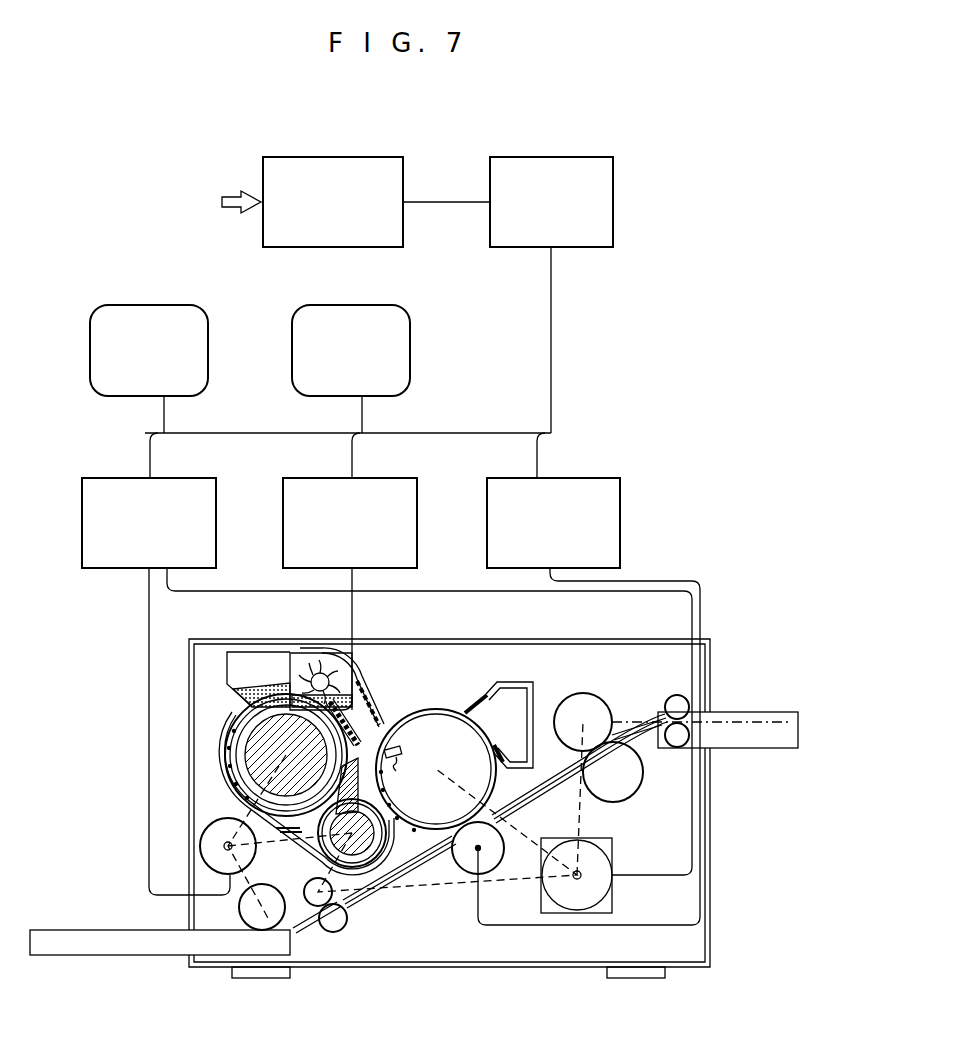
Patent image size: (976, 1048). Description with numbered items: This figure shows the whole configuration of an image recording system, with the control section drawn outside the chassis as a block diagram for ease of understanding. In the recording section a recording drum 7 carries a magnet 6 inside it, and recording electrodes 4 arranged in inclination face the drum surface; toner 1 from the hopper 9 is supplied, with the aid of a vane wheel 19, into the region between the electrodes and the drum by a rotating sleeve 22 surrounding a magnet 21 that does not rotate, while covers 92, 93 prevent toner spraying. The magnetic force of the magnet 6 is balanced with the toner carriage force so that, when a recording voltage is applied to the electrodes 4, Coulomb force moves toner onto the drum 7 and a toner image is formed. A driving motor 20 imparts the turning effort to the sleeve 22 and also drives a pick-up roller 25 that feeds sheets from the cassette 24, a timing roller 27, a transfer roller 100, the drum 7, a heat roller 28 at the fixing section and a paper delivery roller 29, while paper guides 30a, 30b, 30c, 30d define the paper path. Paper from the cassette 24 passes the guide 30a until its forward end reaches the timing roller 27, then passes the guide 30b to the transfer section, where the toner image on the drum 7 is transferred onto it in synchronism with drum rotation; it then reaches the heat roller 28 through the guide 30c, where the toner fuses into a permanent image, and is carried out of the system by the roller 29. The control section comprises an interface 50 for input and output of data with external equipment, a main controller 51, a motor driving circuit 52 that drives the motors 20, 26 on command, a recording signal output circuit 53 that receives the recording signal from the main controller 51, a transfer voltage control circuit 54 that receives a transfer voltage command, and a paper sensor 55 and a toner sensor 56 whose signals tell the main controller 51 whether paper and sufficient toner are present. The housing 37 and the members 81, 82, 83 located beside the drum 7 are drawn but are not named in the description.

The toner 1 is at (238, 706).
The recording electrodes 4 is at (362, 736).
The magnet 6 is at (400, 768).
The recording drum 7 is at (423, 710).
The toner hopper 9 is at (230, 674).
The vane wheel 19 is at (313, 670).
The driving motor 20 is at (200, 834).
The magnet 21 is at (260, 753).
The sleeve 22 is at (250, 782).
The cassette 24 is at (86, 932).
The pick-up roller 25 is at (239, 914).
The motor 26 is at (605, 854).
The timing roller 27 is at (308, 884).
The heat roller 28 is at (582, 693).
The paper delivery roller 29 is at (676, 695).
The paper guide 30a is at (316, 924).
The paper guide 30b is at (406, 873).
The paper guide 30c is at (547, 786).
The paper guide 30d is at (636, 722).
The housing 37 is at (405, 968).
The interface 50 is at (332, 157).
The main controller 51 is at (548, 157).
The motor driving circuit 52 is at (119, 478).
The recording signal output circuit 53 is at (319, 478).
The transfer voltage control circuit 54 is at (523, 478).
The paper sensor 55 is at (177, 305).
The toner sensor 56 is at (347, 305).
The cleaner housing 81 is at (510, 684).
The cleaning blade 82 is at (468, 708).
The seal 83 is at (498, 745).
The cover 92 is at (366, 696).
The cover 93 is at (238, 780).
The transfer roller 100 is at (467, 860).